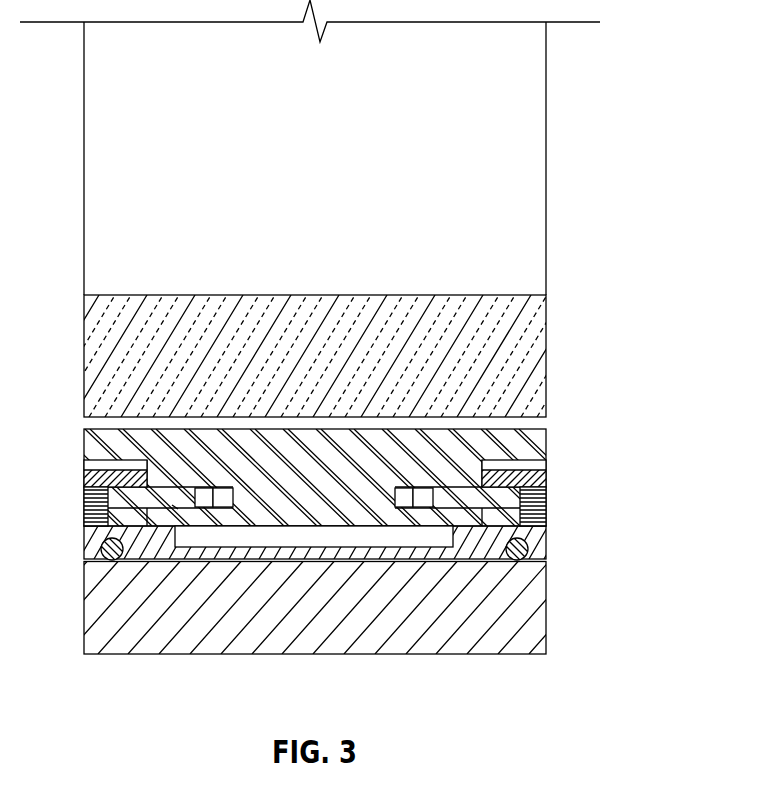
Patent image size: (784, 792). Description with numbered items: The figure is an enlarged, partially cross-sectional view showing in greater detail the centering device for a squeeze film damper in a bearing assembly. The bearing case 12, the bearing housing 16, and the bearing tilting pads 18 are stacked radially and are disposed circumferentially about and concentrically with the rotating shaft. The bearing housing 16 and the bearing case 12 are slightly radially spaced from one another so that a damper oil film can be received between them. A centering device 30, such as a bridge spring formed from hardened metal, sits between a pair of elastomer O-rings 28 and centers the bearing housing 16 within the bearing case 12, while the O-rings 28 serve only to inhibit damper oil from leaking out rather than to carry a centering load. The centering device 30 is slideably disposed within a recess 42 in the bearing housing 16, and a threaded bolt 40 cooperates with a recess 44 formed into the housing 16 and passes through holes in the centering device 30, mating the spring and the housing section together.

The bearing case 12 is at (547, 633).
The bearing housing 16 is at (547, 443).
The bearing tilting pads 18 is at (547, 323).
The elastomer O-rings 28 is at (545, 562).
The centering device 30 is at (547, 531).
The threaded bolt 40 is at (547, 492).
The recess 42 is at (88, 460).
The recess 44 is at (175, 507).